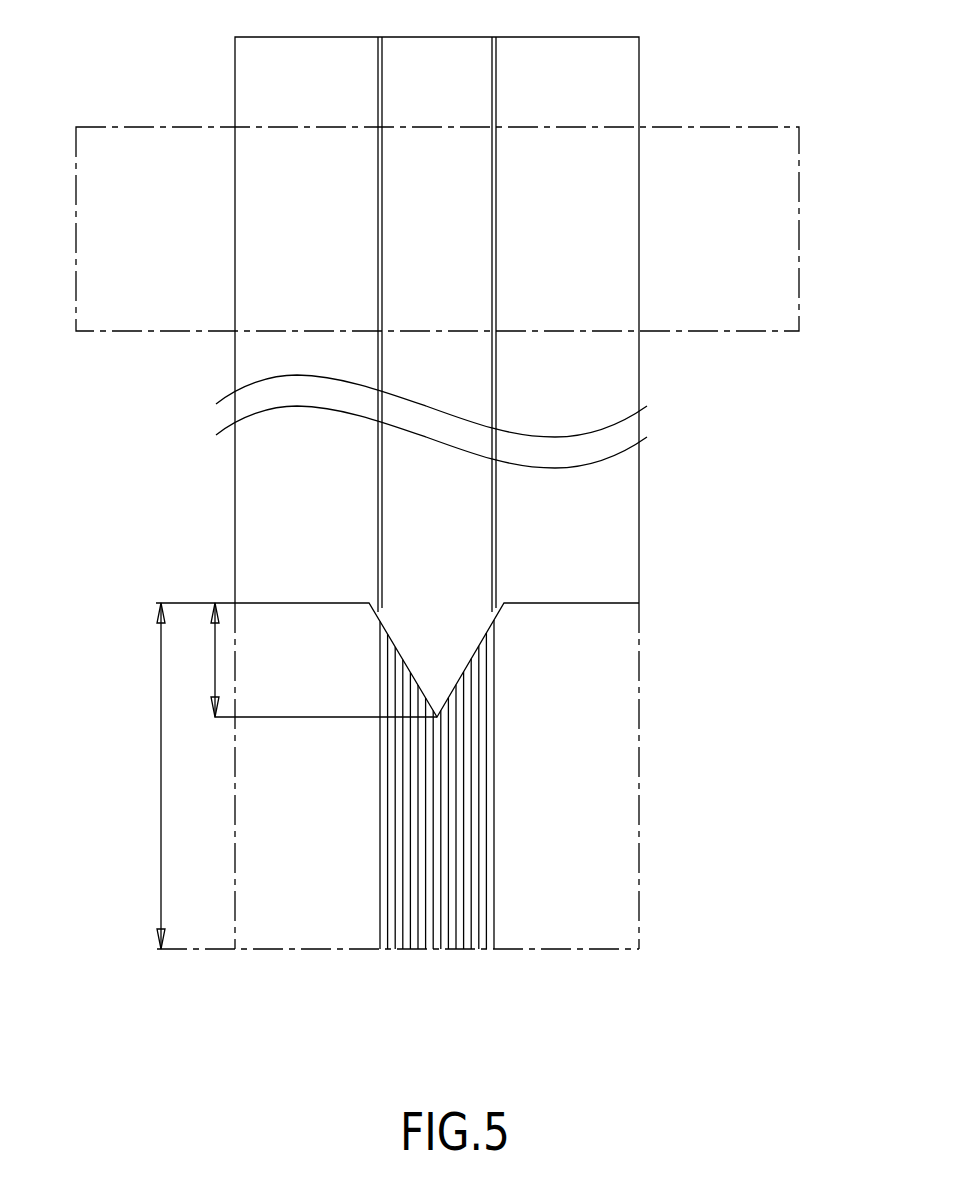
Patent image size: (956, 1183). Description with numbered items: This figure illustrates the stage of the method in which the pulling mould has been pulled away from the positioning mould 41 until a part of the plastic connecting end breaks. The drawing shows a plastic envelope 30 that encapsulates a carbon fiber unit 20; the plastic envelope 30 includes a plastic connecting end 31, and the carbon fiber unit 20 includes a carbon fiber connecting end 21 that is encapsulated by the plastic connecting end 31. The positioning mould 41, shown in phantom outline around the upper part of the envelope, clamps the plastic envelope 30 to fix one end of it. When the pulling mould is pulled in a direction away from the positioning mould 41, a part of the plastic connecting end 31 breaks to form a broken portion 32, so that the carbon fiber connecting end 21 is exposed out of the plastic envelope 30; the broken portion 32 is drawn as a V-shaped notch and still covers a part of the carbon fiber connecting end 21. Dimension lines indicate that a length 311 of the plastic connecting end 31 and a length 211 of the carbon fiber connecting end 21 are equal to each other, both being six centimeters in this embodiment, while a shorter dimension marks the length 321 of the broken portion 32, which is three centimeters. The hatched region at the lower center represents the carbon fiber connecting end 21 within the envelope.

The carbon fiber unit 20 is at (480, 562).
The carbon fiber connecting end 21 is at (393, 917).
The length of the carbon fiber connecting end 211 is at (118, 776).
The plastic envelope 30 is at (642, 510).
The plastic connecting end 31 is at (628, 920).
The length of the plastic connecting end 311 is at (161, 645).
The broken portion 32 is at (455, 662).
The length of the broken portion 321 is at (215, 668).
The positioning mould 41 is at (143, 317).